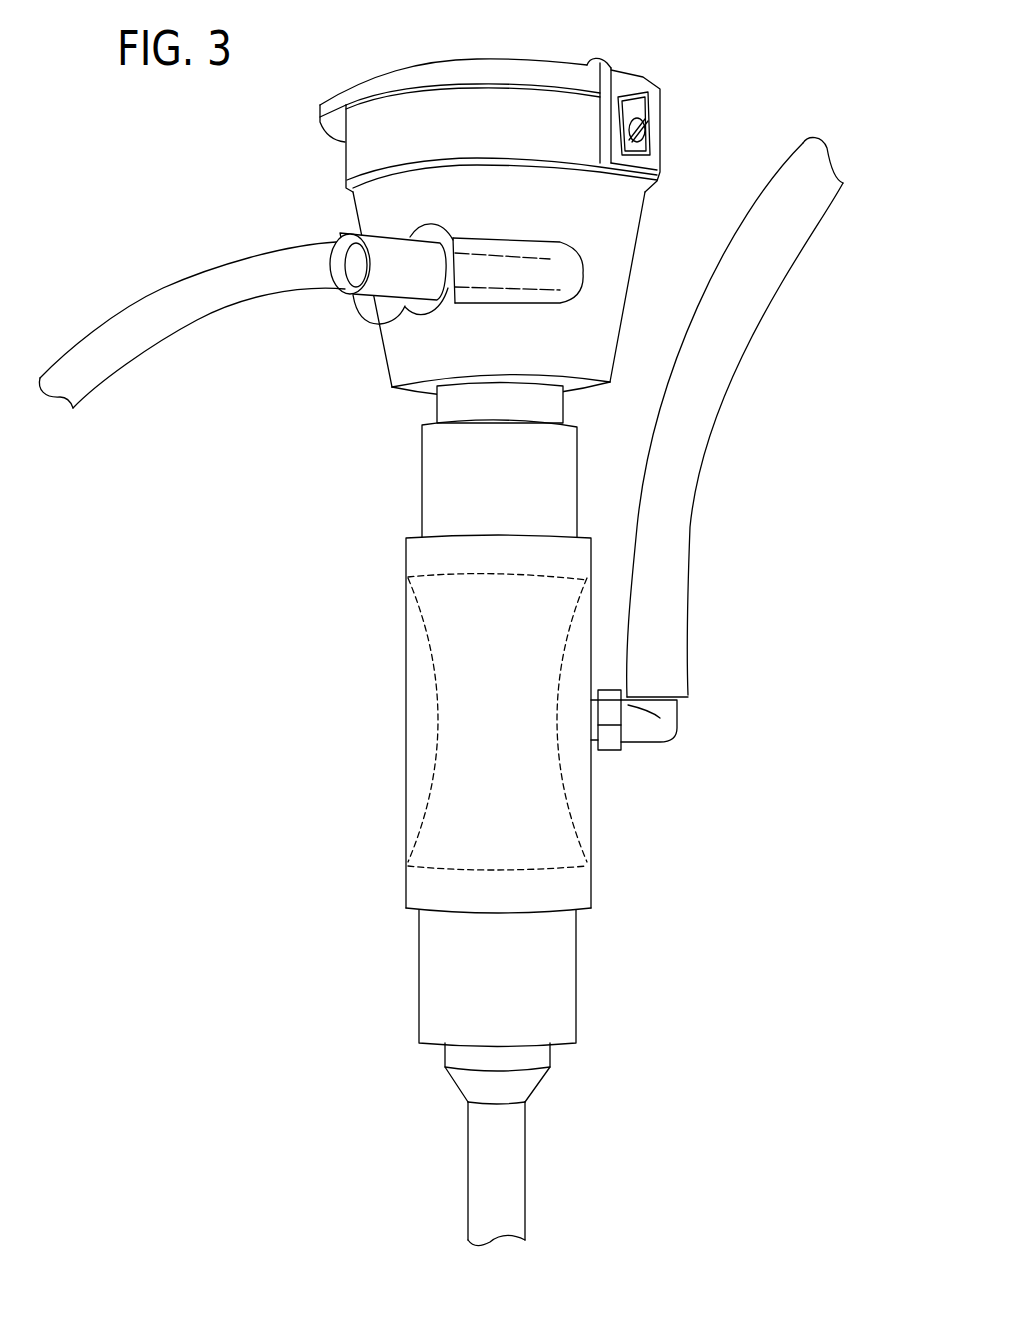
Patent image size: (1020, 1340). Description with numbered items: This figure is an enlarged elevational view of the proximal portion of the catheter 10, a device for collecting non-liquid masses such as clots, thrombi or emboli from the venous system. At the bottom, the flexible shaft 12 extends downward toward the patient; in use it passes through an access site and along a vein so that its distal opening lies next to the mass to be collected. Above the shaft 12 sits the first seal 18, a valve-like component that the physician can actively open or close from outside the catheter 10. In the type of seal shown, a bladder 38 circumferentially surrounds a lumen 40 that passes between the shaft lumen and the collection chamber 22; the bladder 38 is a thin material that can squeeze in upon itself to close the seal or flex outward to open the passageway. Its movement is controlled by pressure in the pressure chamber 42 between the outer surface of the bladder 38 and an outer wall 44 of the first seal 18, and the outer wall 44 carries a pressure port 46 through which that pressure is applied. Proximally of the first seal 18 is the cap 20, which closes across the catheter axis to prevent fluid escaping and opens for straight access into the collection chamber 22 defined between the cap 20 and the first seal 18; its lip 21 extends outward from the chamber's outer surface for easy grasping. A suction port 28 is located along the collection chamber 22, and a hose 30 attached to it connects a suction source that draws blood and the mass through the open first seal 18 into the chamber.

The catheter 10 is at (184, 199).
The shaft 12 is at (525, 1173).
The first seal 18 is at (360, 647).
The cap 20 is at (495, 58).
The lip 21 is at (319, 117).
The collection chamber 22 is at (633, 260).
The suction port 28 is at (385, 282).
The hose 30 is at (183, 330).
The bladder 38 is at (570, 808).
The lumen 40 is at (515, 753).
The pressure chamber 42 is at (423, 788).
The outer wall 44 is at (406, 758).
The pressure port 46 is at (677, 732).